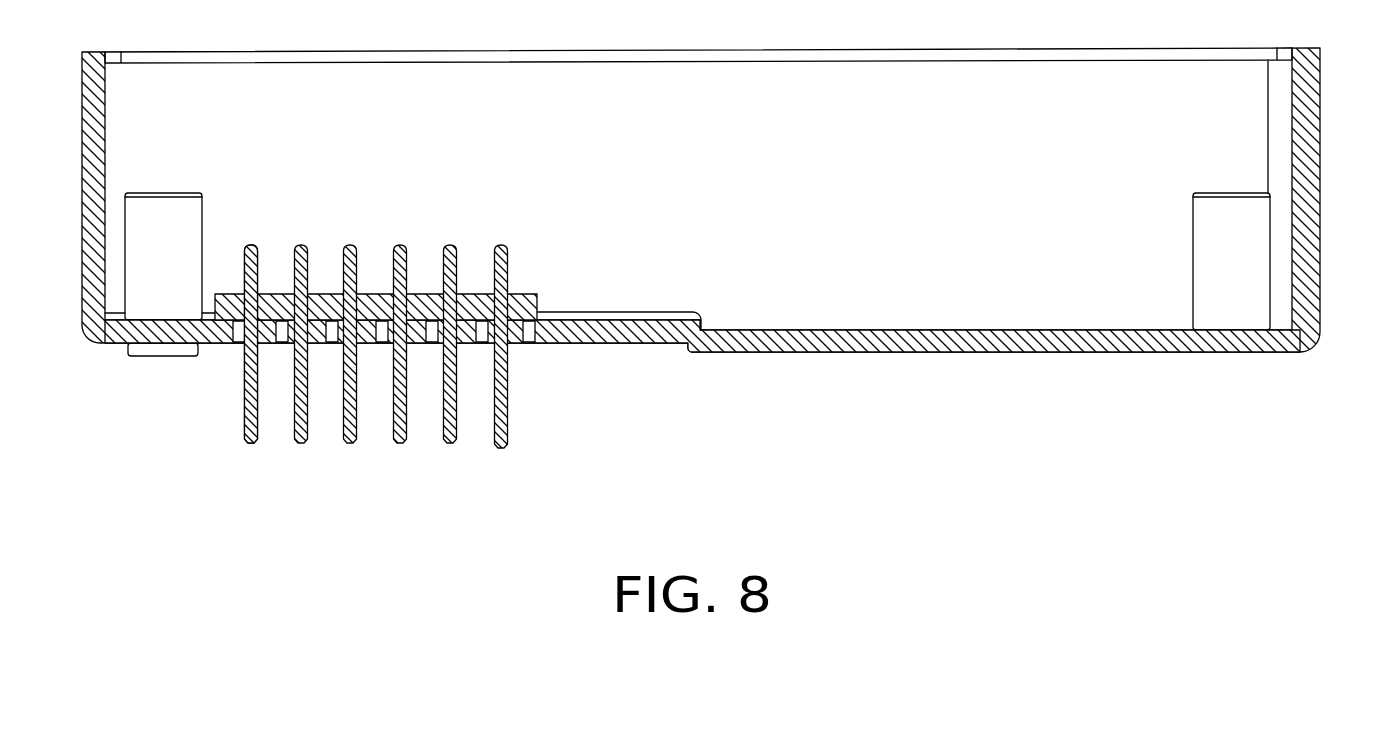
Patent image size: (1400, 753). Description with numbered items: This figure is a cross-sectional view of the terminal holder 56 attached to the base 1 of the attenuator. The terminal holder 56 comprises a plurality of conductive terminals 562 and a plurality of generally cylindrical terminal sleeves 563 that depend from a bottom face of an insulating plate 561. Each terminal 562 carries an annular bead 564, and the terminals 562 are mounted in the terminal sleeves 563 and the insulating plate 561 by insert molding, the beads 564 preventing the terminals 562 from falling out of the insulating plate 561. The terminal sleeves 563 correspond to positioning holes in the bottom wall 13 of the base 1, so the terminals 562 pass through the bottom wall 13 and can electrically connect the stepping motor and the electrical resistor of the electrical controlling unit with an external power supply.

The base 1 is at (1305, 170).
The bottom wall 13 is at (633, 333).
The terminal holder 56 is at (385, 347).
The insulating plate 561 is at (528, 290).
The conductive terminals 562 is at (502, 420).
The terminal sleeves 563 is at (240, 335).
The annular bead 564 is at (266, 294).